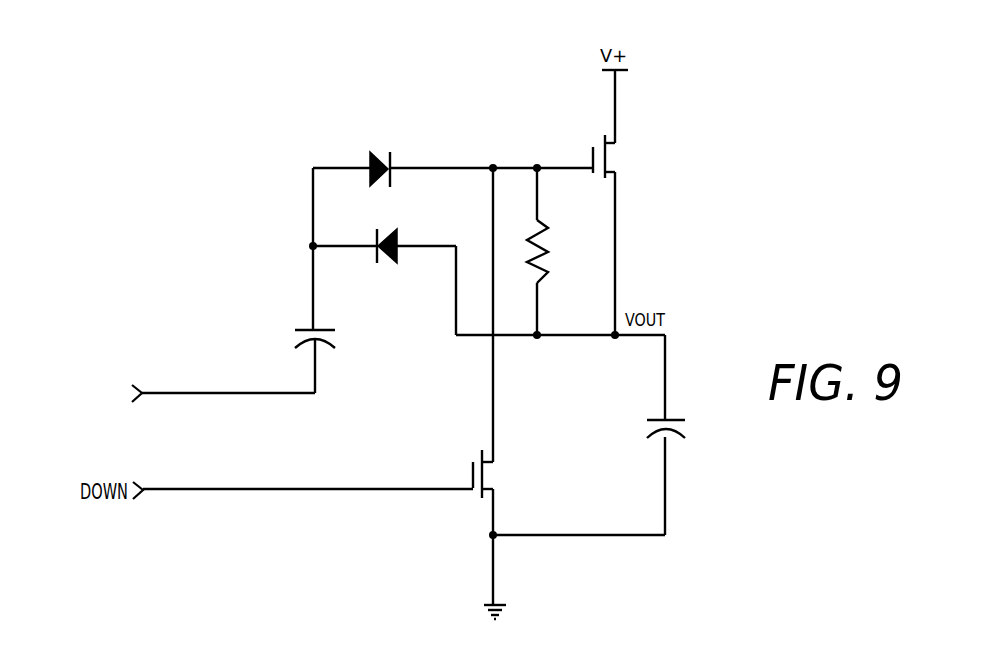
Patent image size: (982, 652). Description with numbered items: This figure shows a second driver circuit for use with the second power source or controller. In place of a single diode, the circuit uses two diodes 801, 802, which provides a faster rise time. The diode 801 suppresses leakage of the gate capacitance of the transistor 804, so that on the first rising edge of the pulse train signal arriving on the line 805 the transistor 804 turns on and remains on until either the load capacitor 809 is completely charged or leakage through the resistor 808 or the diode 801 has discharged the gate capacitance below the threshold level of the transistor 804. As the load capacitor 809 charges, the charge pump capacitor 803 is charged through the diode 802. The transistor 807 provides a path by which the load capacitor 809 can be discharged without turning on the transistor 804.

The diode 801 is at (380, 152).
The diode 802 is at (390, 263).
The charge pump capacitor 803 is at (293, 338).
The transistor 804 is at (618, 160).
The line 805 is at (192, 392).
The transistor 807 is at (492, 478).
The resistor 808 is at (547, 252).
The load capacitor 809 is at (677, 420).